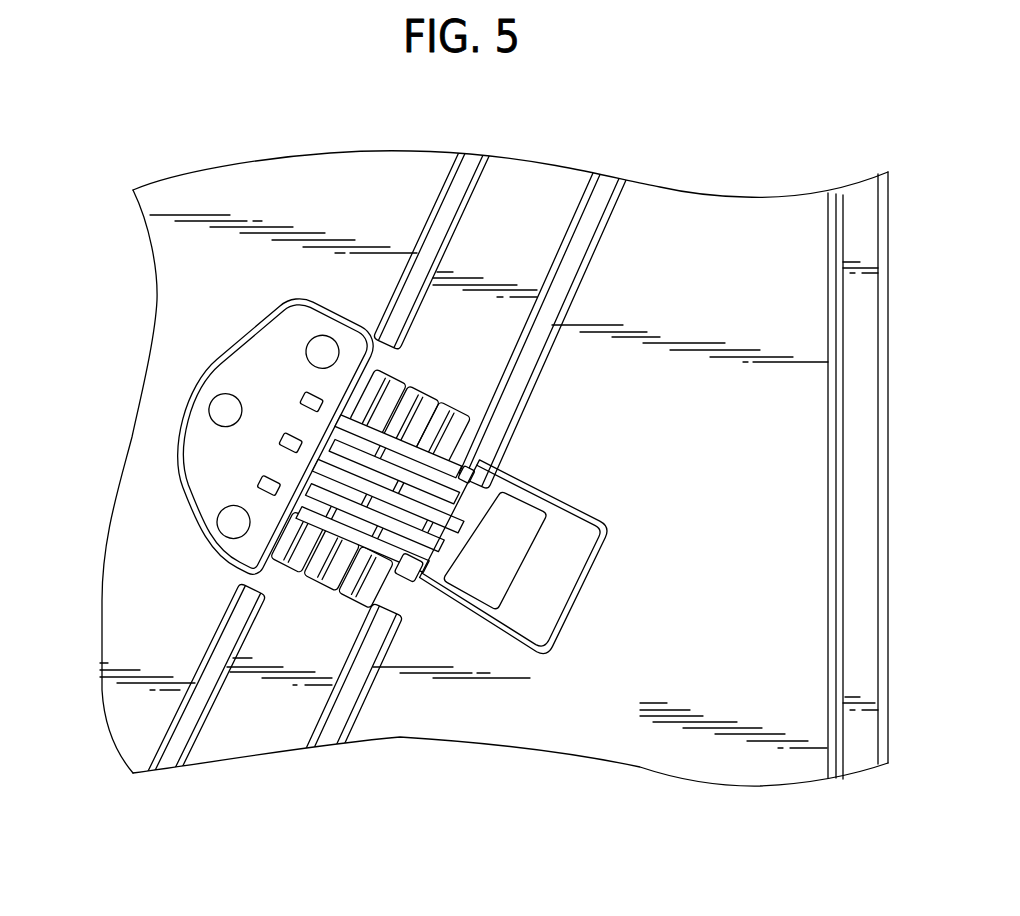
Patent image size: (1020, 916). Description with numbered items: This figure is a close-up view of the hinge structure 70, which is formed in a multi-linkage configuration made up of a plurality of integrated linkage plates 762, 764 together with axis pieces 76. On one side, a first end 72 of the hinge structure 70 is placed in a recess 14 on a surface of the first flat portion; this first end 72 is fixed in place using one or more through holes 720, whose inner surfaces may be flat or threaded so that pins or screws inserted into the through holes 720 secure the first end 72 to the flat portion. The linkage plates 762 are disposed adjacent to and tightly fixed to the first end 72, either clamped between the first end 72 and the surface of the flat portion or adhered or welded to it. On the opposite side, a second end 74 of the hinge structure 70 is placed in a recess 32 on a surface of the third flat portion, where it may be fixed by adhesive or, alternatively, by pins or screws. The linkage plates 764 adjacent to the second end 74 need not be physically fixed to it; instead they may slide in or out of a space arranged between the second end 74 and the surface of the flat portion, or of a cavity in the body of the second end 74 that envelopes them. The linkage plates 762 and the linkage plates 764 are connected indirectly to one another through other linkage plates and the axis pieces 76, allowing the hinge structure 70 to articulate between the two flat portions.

The recess 14 is at (255, 566).
The recess 32 is at (520, 648).
The hinge structure 70 is at (240, 340).
The first end 72 is at (203, 487).
The through holes 720 is at (212, 420).
The second end 74 is at (572, 550).
The axis pieces 76 is at (325, 585).
The linkage plates 762 is at (372, 408).
The linkage plates 764 is at (493, 424).